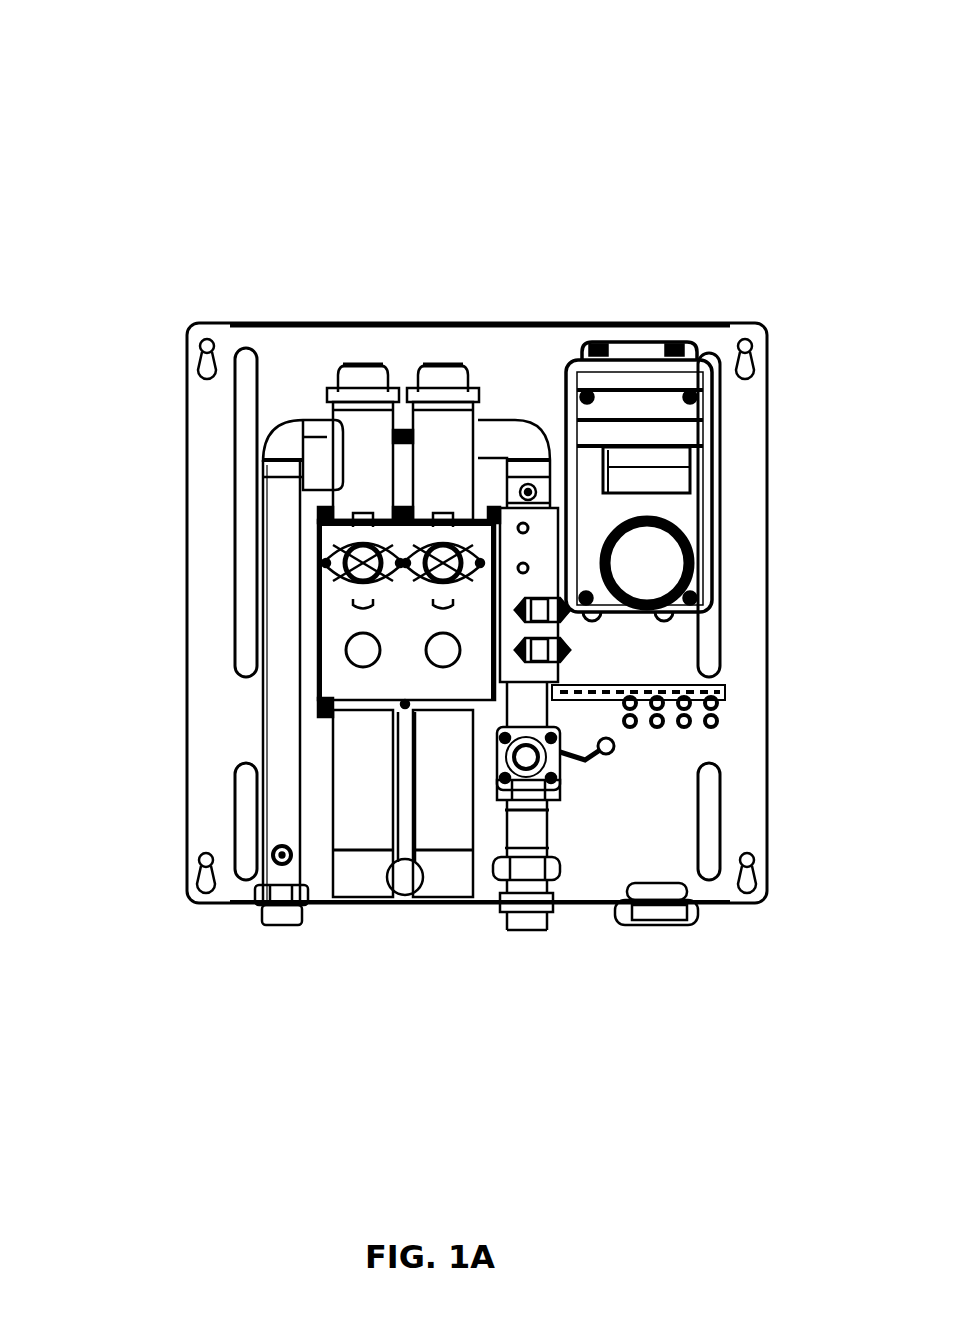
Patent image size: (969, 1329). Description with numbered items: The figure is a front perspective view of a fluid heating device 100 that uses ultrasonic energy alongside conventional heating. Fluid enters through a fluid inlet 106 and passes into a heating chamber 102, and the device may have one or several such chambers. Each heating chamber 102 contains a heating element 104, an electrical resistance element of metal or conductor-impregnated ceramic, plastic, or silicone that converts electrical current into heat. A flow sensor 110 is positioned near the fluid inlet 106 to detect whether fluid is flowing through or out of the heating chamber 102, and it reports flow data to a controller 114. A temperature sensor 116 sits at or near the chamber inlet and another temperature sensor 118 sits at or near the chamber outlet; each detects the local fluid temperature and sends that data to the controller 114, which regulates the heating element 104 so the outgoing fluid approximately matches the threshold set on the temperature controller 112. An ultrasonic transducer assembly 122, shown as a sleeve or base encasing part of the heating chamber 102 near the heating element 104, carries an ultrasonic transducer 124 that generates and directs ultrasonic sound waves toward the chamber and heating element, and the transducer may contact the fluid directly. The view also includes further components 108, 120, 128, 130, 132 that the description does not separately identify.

The fluid heating device 100 is at (153, 58).
The heating chamber 102 is at (330, 497).
The heating element 104 is at (350, 364).
The fluid inlet 106 is at (533, 937).
The drain fitting 108 is at (296, 925).
The flow sensor 110 is at (563, 778).
The temperature controller 112 is at (692, 540).
The controller 114 is at (632, 352).
The temperature sensor 116 is at (517, 487).
The temperature sensor 118 is at (276, 864).
The ports 120 is at (568, 644).
The ultrasonic transducer assembly 122 is at (318, 678).
The ultrasonic transducer 124 is at (352, 640).
The mounting bracket 128 is at (660, 925).
The terminal block 130 is at (723, 703).
The elbow fitting 132 is at (518, 420).